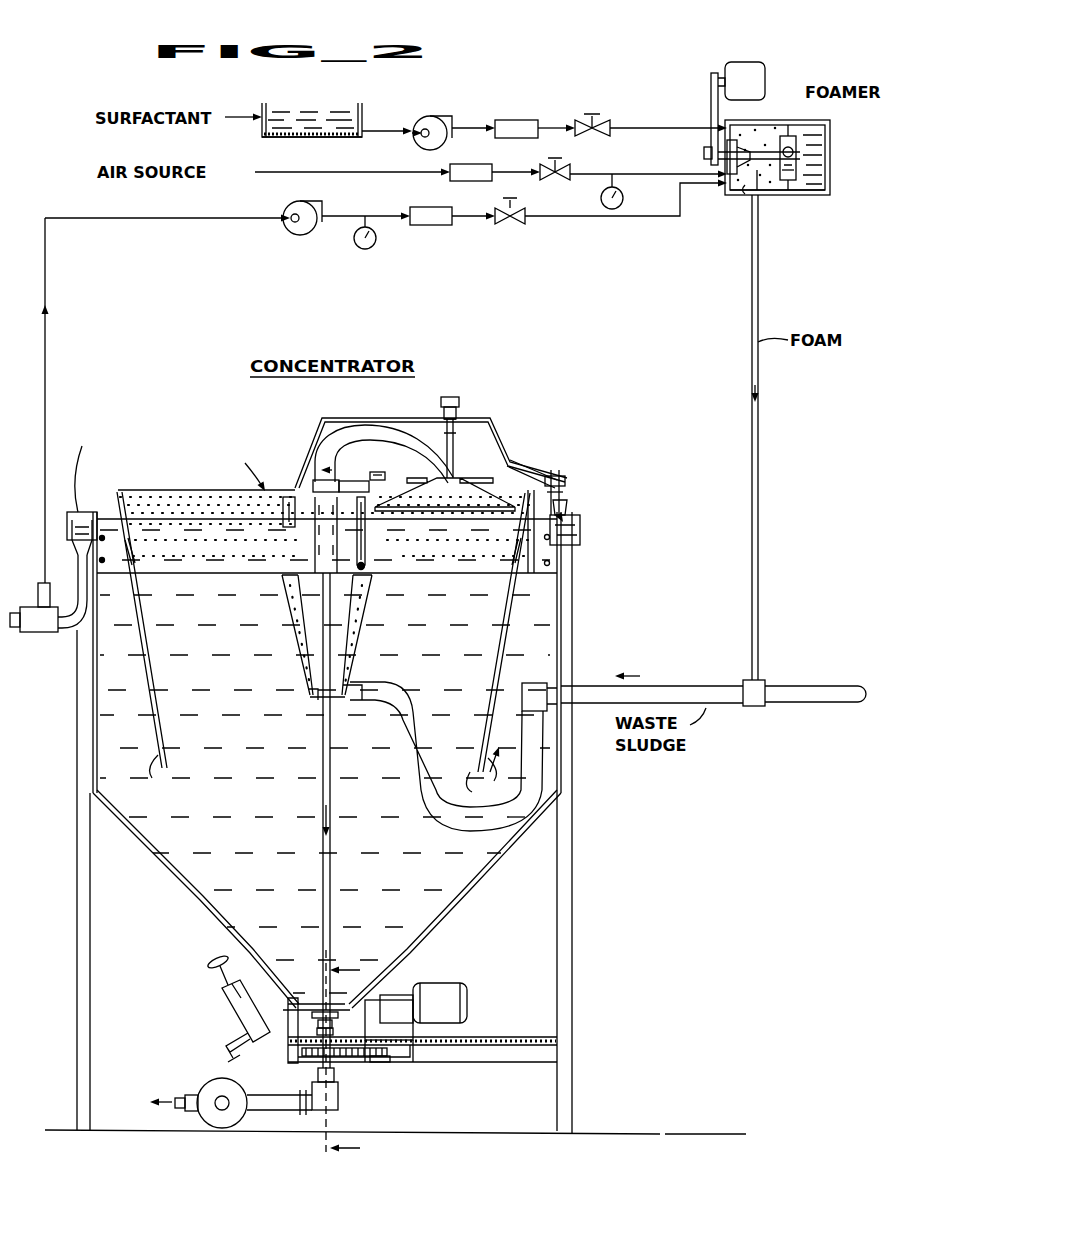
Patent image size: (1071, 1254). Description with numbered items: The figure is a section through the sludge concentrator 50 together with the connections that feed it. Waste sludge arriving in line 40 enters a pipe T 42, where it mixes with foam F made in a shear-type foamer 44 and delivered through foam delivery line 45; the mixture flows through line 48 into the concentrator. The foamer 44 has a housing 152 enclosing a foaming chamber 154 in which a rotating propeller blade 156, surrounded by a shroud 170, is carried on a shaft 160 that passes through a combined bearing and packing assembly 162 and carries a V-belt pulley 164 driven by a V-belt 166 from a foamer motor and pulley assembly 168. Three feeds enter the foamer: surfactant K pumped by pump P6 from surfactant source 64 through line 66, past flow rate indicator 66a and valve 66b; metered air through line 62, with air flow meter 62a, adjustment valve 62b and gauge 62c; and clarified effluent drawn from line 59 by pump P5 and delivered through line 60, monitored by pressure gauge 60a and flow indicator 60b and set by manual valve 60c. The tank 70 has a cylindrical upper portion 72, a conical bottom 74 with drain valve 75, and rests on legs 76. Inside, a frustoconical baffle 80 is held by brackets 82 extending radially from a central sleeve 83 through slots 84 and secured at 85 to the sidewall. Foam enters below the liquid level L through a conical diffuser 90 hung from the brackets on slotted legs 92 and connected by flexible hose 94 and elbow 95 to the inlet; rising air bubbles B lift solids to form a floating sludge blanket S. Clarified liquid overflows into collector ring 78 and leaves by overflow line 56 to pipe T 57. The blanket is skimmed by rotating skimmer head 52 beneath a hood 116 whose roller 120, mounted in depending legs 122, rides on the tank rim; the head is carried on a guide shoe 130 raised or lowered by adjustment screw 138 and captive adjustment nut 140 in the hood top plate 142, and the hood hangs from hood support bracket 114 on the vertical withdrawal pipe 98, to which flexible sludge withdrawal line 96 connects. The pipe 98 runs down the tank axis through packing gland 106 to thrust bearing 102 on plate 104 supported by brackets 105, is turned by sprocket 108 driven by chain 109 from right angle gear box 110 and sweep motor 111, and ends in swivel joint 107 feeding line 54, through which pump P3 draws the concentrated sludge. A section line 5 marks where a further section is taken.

The surfactant K is at (318, 106).
The surfactant source 64 is at (262, 132).
The pump P6 is at (428, 120).
The flow rate indicator 66a is at (512, 120).
The valve 66b is at (586, 124).
The line 66 is at (632, 128).
The air flow meter 62a is at (471, 170).
The adjustment valve 62b is at (558, 178).
The line 62 is at (642, 172).
The gauge 62c is at (640, 202).
The line 59 is at (45, 300).
The pump P5 is at (302, 233).
The pressure gauge 60a is at (378, 250).
The flow indicator 60b is at (418, 226).
The manual valve 60c is at (504, 230).
The line 60 is at (630, 224).
The shear-type foamer 44 is at (836, 180).
The foamer motor and pulley assembly 168 is at (755, 66).
The V-belt 166 is at (711, 96).
The V-belt pulley 164 is at (704, 152).
The shaft 160 is at (760, 152).
The combined bearing and packing assembly 162 is at (742, 196).
The rotating propeller blade 156 is at (800, 145).
The shroud 170 is at (796, 172).
The foaming chamber 154 is at (776, 192).
The foamer housing 152 is at (818, 197).
The foam F is at (752, 196).
The foam delivery line 45 is at (752, 332).
The pipe T 42 is at (752, 706).
The line 40 is at (813, 686).
The line 48 is at (688, 688).
The sludge concentration device 50 is at (612, 598).
The cylindrical upper portion 72 is at (93, 736).
The conical bottom 74 is at (172, 893).
The tank 70 is at (512, 874).
The legs 76 is at (77, 866).
The brackets 82 is at (244, 574).
The frustoconical baffle 80 is at (146, 688).
The bracket securing point 85 is at (100, 565).
The slots 84 is at (146, 556).
The sludge blanket S is at (192, 490).
The overflow line 56 is at (72, 632).
The pipe T 57 is at (38, 640).
The top plate 142 is at (333, 418).
The flexible sludge withdrawal line 96 is at (392, 430).
The hood support bracket 114 is at (345, 481).
The captive adjustment nut 140 is at (458, 400).
The adjustment screw 138 is at (458, 442).
The flexible hose 94 is at (464, 492).
The combined hood and pickup head support 116 is at (526, 450).
The channel-shaped guide shoe 130 is at (514, 486).
The rotating skimmer head 52 is at (565, 480).
The depending legs 122 is at (567, 493).
The roller 120 is at (570, 510).
The collector ring 78 is at (582, 531).
The central sleeve 83 is at (312, 540).
The conical diffuser 90 is at (308, 668).
The slotted legs 92 is at (300, 615).
The air bubbles B is at (336, 656).
The vertical withdrawal pipe 98 is at (323, 733).
The clarified liquid L is at (558, 642).
The elbow 95 is at (548, 684).
The section line 5- 5 is at (343, 1060).
The brackets 105 is at (312, 1000).
The thrust bearing 102 is at (286, 1036).
The sprocket 108 is at (302, 1058).
The plate 104 is at (502, 1030).
The chain 109 is at (348, 1064).
The right angle gear box 110 is at (398, 1050).
The packing gland 106 is at (380, 1000).
The sweep motor 111 is at (455, 988).
The swivel joint 107 is at (338, 1092).
The pump P3 is at (214, 1094).
The line 54 is at (180, 1096).
The drain valve 75 is at (240, 1028).